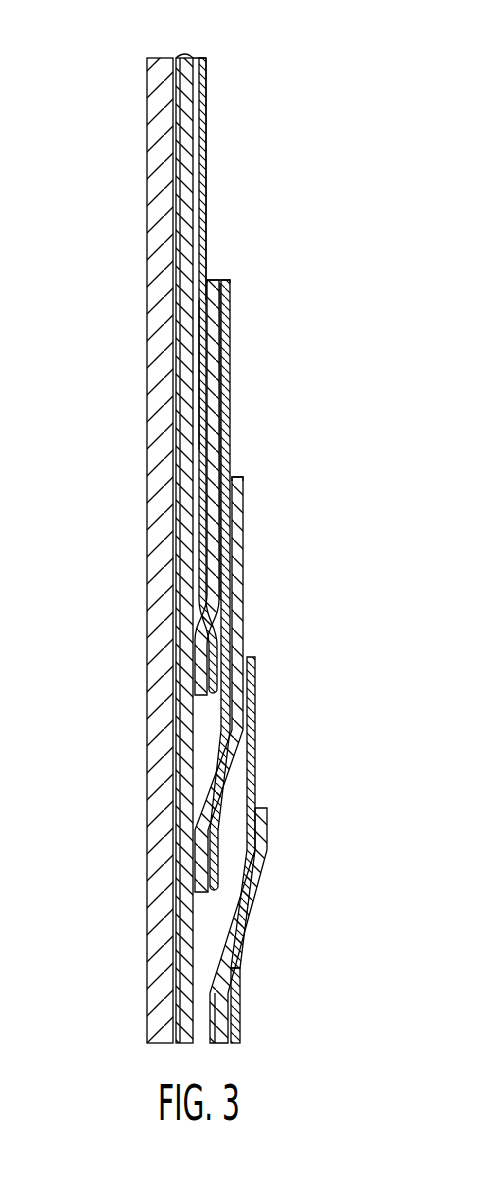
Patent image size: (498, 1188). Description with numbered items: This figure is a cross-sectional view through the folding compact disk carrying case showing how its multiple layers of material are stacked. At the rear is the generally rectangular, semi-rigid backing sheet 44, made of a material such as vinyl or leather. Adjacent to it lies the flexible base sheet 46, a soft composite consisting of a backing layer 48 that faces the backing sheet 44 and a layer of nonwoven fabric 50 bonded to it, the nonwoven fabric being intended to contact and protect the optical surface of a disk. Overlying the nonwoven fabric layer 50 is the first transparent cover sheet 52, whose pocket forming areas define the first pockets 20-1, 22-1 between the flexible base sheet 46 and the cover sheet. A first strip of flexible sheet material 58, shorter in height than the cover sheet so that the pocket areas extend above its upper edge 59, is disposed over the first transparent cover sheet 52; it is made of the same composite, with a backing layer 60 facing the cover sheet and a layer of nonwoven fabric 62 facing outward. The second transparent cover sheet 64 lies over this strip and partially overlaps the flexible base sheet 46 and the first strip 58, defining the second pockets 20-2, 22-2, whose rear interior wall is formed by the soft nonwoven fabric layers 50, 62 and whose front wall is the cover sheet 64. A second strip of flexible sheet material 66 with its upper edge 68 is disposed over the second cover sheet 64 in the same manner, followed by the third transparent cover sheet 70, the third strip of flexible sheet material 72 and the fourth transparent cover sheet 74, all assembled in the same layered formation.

The backing sheet 44 is at (163, 83).
The flexible base sheet 46 is at (186, 58).
The backing layer 48 is at (187, 127).
The layer of nonwoven fabric 50 is at (206, 147).
The first transparent cover sheet 52 is at (207, 72).
The first pocket 20-1 is at (213, 521).
The first pocket 22-1 is at (213, 521).
The first strip of flexible sheet material 58 is at (213, 410).
The upper edge 59 is at (216, 280).
The backing layer 60 is at (200, 370).
The layer of nonwoven fabric 62 is at (215, 362).
The second transparent cover sheet 64 is at (232, 310).
The second pocket 20-2 is at (271, 555).
The second pocket 22-2 is at (271, 555).
The second strip of flexible sheet material 66 is at (243, 527).
The upper edge 68 is at (236, 478).
The third transparent cover sheet 70 is at (256, 745).
The third strip of flexible sheet material 72 is at (262, 870).
The fourth transparent cover sheet 74 is at (241, 1012).